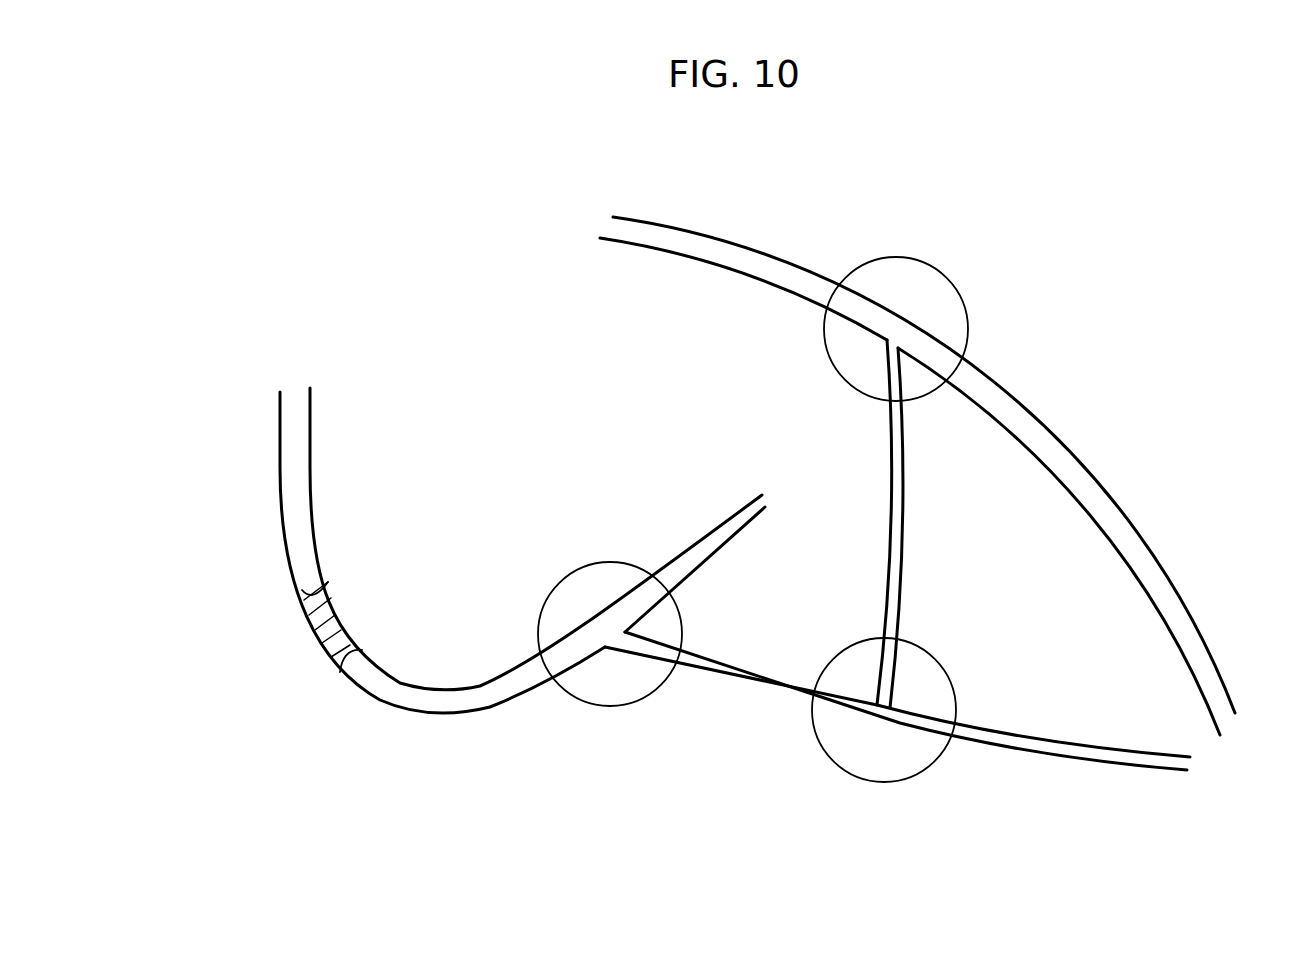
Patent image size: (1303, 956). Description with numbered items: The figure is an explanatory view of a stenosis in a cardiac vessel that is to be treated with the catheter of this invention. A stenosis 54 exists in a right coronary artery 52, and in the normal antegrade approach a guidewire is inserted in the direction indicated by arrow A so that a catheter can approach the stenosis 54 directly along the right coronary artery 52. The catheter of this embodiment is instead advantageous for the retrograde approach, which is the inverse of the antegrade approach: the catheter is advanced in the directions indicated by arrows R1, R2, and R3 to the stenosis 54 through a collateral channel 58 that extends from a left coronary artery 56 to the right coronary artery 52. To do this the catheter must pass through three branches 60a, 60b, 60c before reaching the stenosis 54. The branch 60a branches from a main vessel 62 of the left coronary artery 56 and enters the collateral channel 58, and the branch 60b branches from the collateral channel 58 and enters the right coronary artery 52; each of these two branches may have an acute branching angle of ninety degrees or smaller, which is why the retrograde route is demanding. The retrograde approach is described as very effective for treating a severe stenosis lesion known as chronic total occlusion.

The right coronary artery 52 is at (278, 458).
The stenosis 54 is at (322, 623).
The left coronary artery 56 is at (758, 253).
The collateral channel 58 is at (895, 545).
The branch 60a is at (963, 295).
The branch 60b is at (890, 784).
The branch 60c is at (618, 710).
The main vessel 62 is at (702, 250).
The arrow A is at (333, 510).
The arrow R1 is at (830, 460).
The arrow R2 is at (783, 657).
The arrow R3 is at (552, 620).